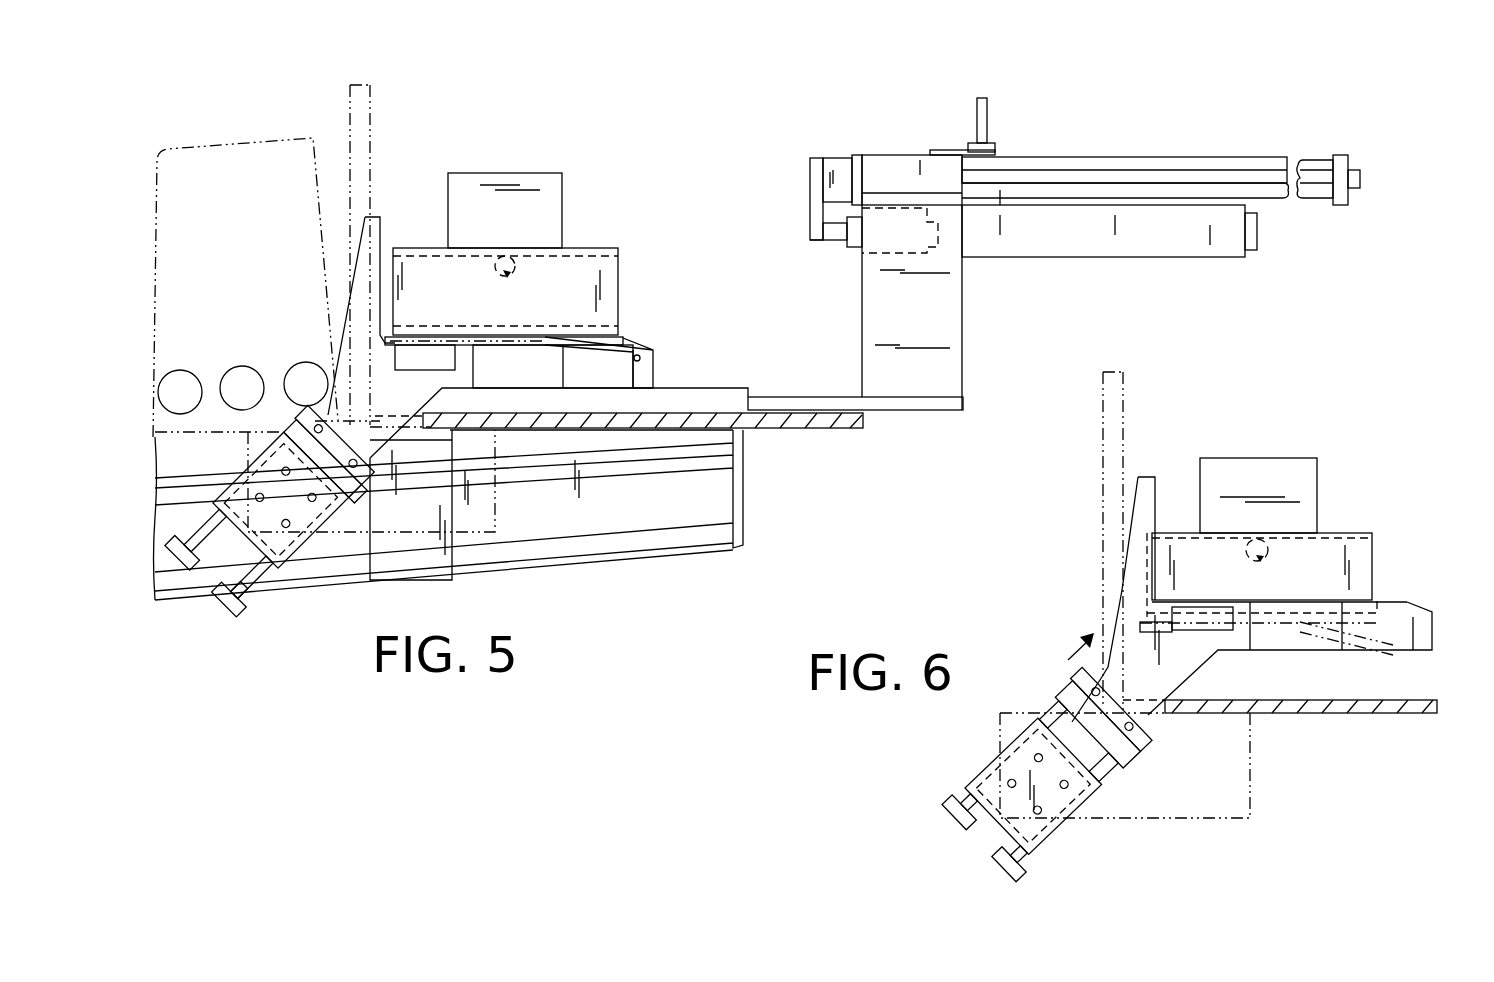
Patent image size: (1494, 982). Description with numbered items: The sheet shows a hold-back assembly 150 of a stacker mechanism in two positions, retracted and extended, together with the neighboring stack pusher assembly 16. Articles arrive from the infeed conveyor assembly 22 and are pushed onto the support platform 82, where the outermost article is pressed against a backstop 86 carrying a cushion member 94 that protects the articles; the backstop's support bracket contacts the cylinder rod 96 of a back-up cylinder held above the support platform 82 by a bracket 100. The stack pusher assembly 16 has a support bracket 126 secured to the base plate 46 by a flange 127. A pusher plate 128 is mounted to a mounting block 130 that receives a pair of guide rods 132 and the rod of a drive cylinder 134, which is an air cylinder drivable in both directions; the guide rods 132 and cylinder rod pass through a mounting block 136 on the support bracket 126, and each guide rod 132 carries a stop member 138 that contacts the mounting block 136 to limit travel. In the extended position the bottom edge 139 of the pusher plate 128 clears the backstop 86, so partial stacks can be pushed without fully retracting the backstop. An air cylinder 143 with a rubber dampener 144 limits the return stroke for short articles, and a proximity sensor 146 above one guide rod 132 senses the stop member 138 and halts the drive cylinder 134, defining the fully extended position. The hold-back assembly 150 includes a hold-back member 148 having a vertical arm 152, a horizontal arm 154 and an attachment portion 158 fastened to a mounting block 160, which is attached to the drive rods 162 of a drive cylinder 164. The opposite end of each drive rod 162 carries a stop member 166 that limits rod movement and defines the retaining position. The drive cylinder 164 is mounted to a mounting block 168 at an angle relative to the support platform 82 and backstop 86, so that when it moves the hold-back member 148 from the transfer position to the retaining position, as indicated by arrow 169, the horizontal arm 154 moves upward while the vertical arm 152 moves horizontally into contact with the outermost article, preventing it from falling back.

In FIG. 5, the stack pusher assembly 16 is at (1050, 255).
In FIG. 5, the infeed conveyor assembly 22 is at (571, 566).
In FIG. 5, the base plate 46 is at (730, 413).
In FIG. 5, the support platform 82 is at (625, 340).
In FIG. 5, the backstop 86 is at (549, 261).
In FIG. 6, the backstop 86 is at (1303, 547).
In FIG. 5, the cushion member 94 is at (615, 268).
In FIG. 6, the cushion member 94 is at (1372, 565).
In FIG. 5, the cylinder rod 96 is at (512, 282).
In FIG. 6, the cylinder rod 96 is at (1268, 560).
In FIG. 5, the bracket 100 is at (505, 172).
In FIG. 6, the bracket 100 is at (1260, 458).
In FIG. 5, the support bracket 126 is at (963, 316).
In FIG. 5, the flange 127 is at (900, 410).
In FIG. 5, the pusher plate 128 is at (812, 198).
In FIG. 5, the mounting block 130 is at (837, 158).
In FIG. 5, the guide rods 132 is at (1238, 186).
In FIG. 5, the drive cylinder 134 is at (1115, 157).
In FIG. 5, the mounting block 136 is at (880, 165).
In FIG. 5, the stop member 138 is at (1340, 157).
In FIG. 5, the bottom edge 139 is at (815, 242).
In FIG. 5, the air cylinder 143 is at (1036, 252).
In FIG. 5, the rubber dampener 144 is at (835, 238).
In FIG. 5, the proximity sensor 146 is at (982, 97).
In FIG. 5, the hold-back member 148 is at (430, 404).
In FIG. 6, the hold-back member 148 is at (1187, 667).
In FIG. 5, the hold-back assembly 150 is at (284, 412).
In FIG. 6, the hold-back assembly 150 is at (1084, 824).
In FIG. 5, the vertical arm 152 is at (368, 222).
In FIG. 6, the vertical arm 152 is at (1143, 476).
In FIG. 5, the horizontal arm 154 is at (640, 384).
In FIG. 6, the horizontal arm 154 is at (1427, 643).
In FIG. 5, the attachment portion 158 is at (318, 424).
In FIG. 6, the attachment portion 158 is at (1111, 709).
In FIG. 5, the mounting block 160 is at (368, 490).
In FIG. 5, the drive rods 162 is at (252, 578).
In FIG. 6, the drive rods 162 is at (1055, 707).
In FIG. 5, the drive cylinder 164 is at (170, 558).
In FIG. 6, the drive cylinder 164 is at (986, 772).
In FIG. 5, the stop member 166 is at (228, 612).
In FIG. 6, the stop member 166 is at (948, 813).
In FIG. 5, the mounting block 168 is at (495, 508).
In FIG. 6, the mounting block 168 is at (1186, 812).
In FIG. 6, the arrow 169 is at (1068, 660).